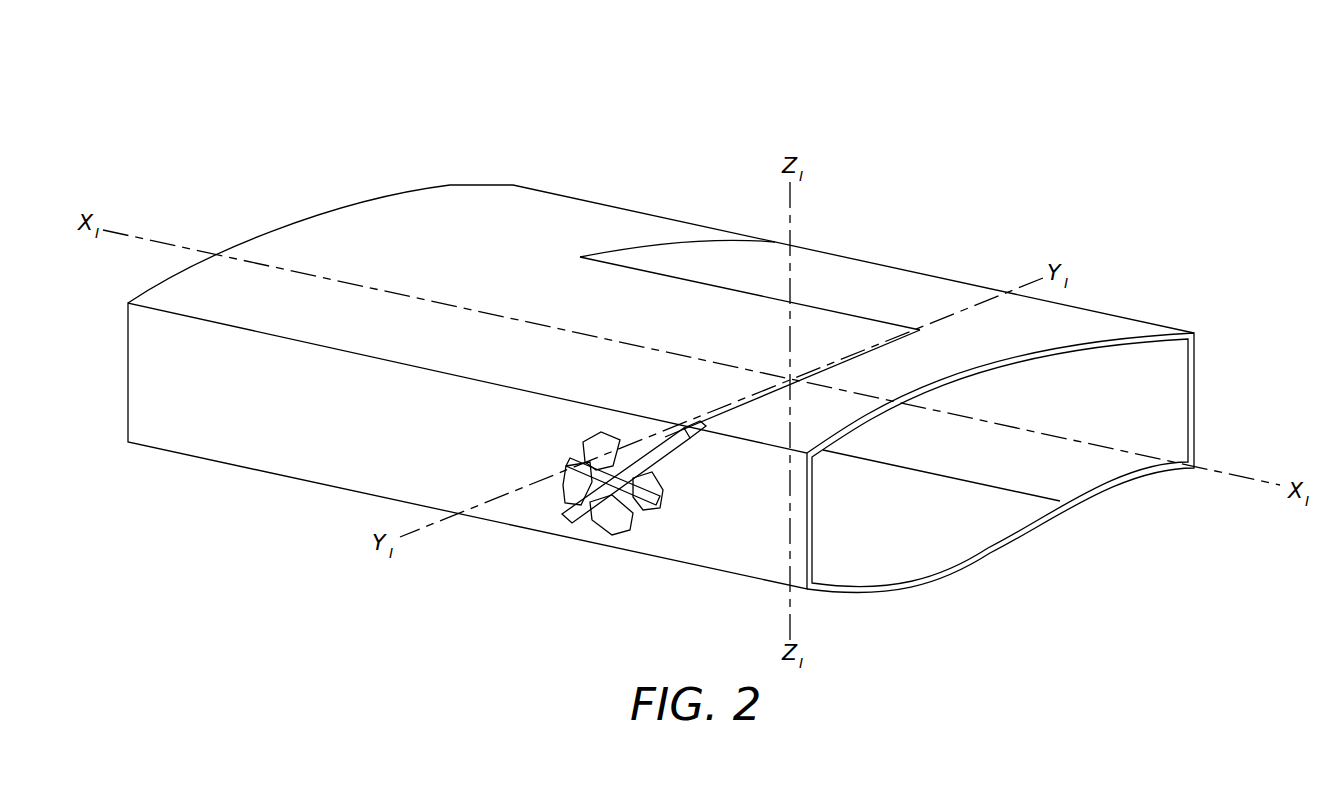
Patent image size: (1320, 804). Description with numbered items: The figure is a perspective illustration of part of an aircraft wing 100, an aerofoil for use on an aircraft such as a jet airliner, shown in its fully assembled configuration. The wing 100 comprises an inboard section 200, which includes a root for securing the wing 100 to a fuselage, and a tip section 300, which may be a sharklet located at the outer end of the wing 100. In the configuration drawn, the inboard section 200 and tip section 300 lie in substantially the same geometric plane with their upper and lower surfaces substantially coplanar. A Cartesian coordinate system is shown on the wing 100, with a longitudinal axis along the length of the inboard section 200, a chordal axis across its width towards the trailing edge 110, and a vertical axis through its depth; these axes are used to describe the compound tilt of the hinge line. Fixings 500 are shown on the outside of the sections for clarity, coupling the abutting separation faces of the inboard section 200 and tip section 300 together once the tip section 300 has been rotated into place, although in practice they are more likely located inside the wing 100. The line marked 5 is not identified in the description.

The aircraft wing 100 is at (514, 98).
The inboard section 200 is at (394, 207).
The trailing edge 110 is at (871, 262).
The cut-away section line 5 is at (653, 274).
The tip section 300 is at (1103, 322).
The fixings 500 is at (562, 521).